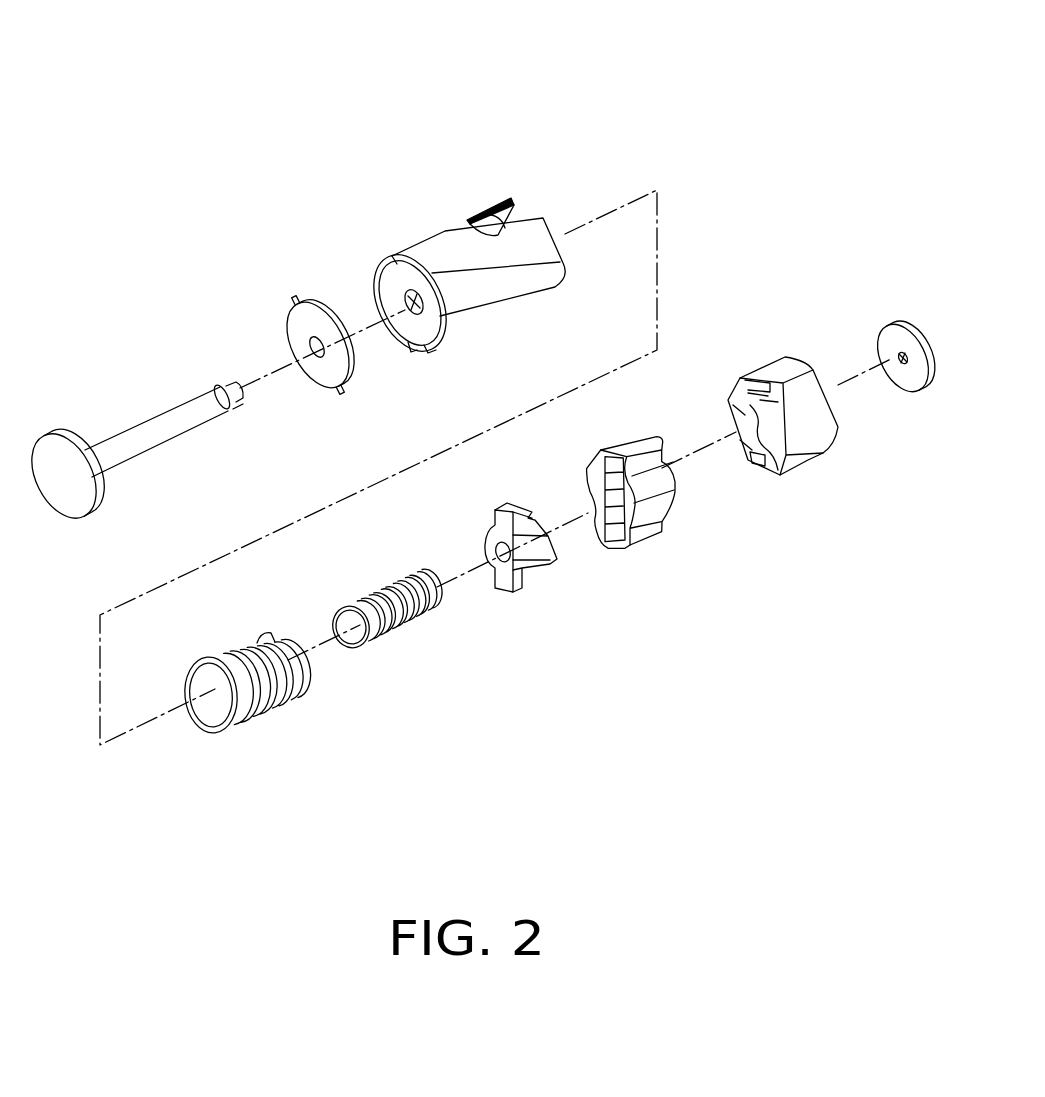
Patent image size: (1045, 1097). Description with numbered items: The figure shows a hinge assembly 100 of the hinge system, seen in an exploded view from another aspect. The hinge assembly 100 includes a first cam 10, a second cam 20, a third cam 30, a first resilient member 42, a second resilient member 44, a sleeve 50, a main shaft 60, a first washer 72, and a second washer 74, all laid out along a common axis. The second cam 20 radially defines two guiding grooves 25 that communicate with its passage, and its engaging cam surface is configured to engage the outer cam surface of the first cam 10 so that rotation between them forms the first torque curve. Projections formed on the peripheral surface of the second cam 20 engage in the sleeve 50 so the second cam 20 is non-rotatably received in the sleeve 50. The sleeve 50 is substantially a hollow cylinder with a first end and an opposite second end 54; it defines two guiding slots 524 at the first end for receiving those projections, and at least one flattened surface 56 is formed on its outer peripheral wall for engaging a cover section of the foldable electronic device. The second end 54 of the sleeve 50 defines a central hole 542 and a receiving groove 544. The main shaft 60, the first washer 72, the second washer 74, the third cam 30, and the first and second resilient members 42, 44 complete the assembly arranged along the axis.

The hinge assembly 100 is at (437, 68).
The first cam 10 is at (813, 430).
The second cam 20 is at (638, 447).
The guiding grooves 25 is at (612, 518).
The third cam 30 is at (537, 558).
The first resilient member 42 is at (403, 617).
The second resilient member 44 is at (248, 710).
The sleeve 50 is at (428, 228).
The second end 54 is at (402, 282).
The flattened surface 56 is at (460, 232).
The guiding slots 524 is at (517, 220).
The central hole 542 is at (413, 313).
The receiving groove 544 is at (397, 272).
The main shaft 60 is at (155, 425).
The first washer 72 is at (297, 322).
The second washer 74 is at (890, 342).